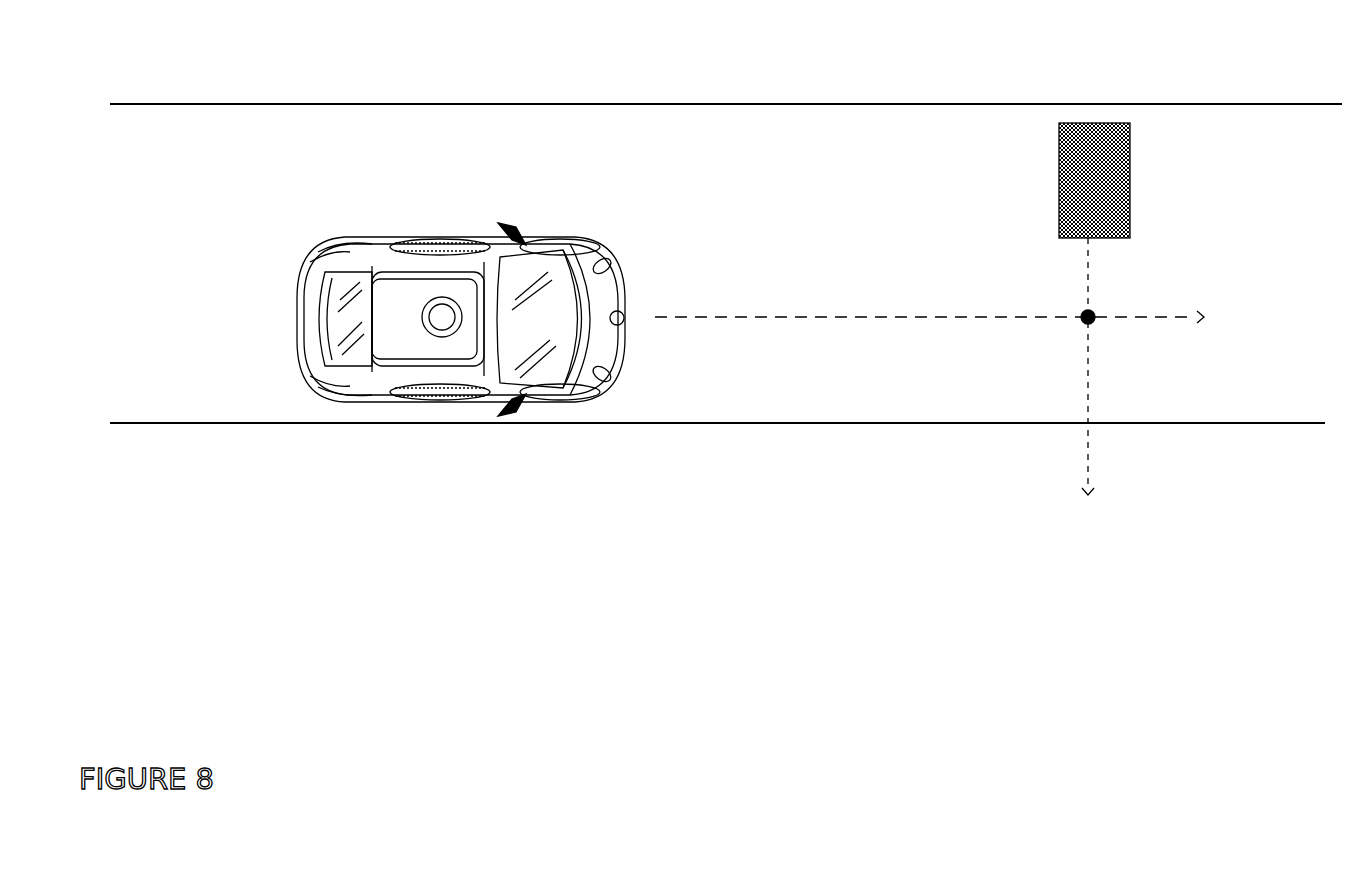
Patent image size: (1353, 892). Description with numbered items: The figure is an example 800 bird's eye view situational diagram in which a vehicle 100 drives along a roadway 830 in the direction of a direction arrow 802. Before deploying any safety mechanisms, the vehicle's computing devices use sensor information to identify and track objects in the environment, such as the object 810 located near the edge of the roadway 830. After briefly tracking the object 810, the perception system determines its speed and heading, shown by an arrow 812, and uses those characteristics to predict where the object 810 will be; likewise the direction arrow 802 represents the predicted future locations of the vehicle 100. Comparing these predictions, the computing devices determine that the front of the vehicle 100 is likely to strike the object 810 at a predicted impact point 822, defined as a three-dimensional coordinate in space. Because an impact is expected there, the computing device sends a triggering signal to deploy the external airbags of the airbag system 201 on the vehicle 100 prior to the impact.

The vehicle 100 is at (297, 357).
The airbag system 201 is at (632, 316).
The example 800 is at (162, 735).
The direction arrow 802 is at (708, 318).
The object 810 is at (1059, 156).
The arrow 812 is at (1088, 256).
The predicted impact point 822 is at (1097, 311).
The roadway 830 is at (726, 263).